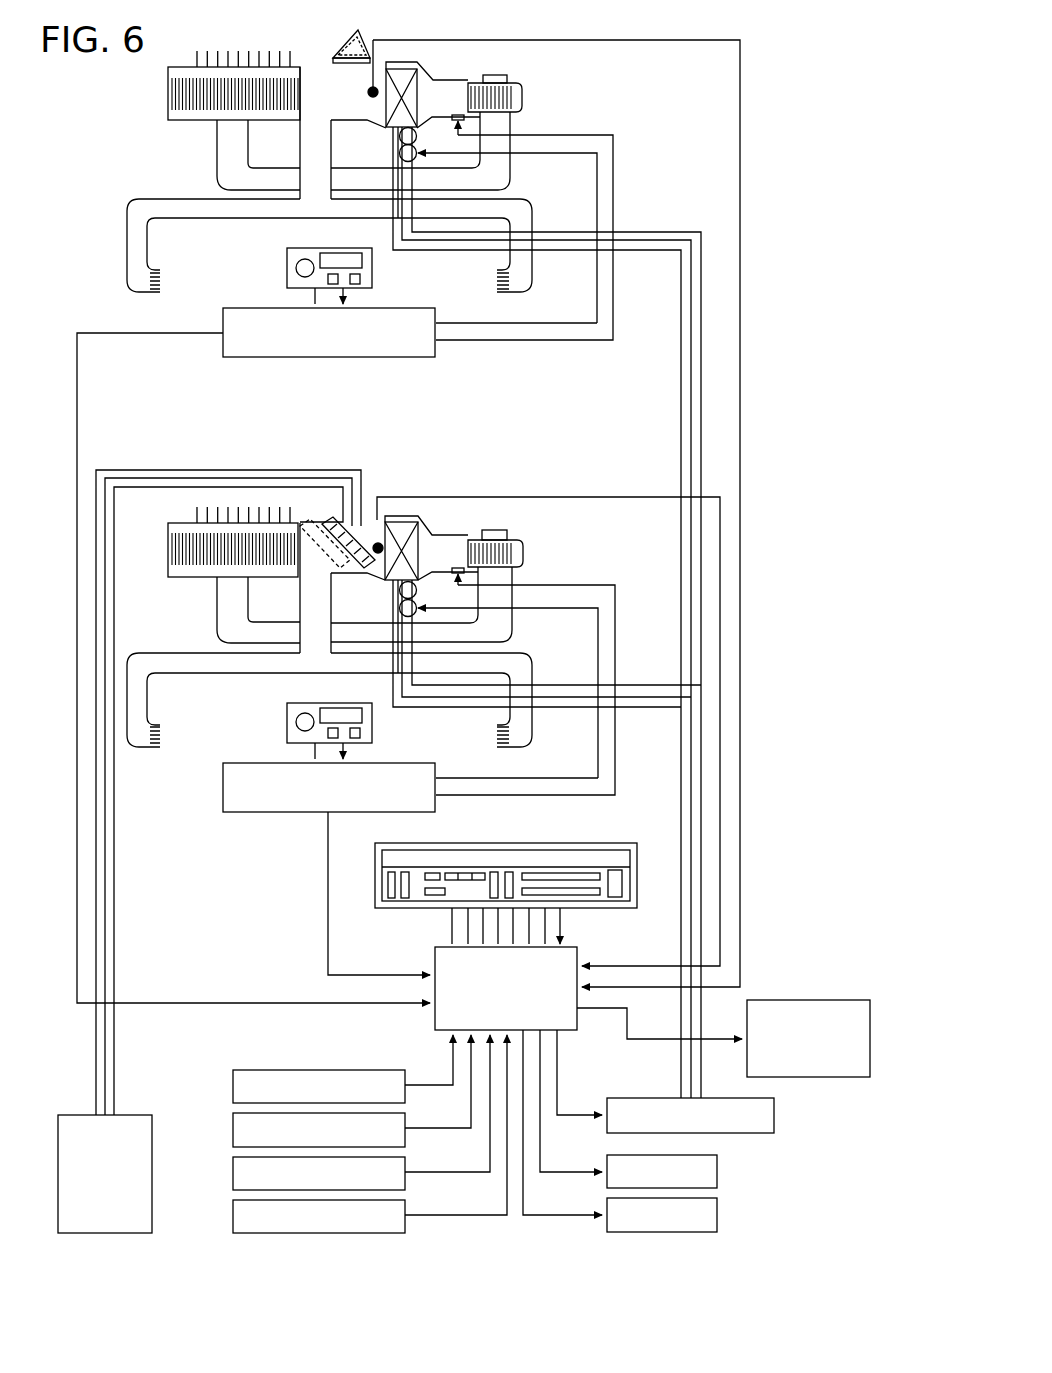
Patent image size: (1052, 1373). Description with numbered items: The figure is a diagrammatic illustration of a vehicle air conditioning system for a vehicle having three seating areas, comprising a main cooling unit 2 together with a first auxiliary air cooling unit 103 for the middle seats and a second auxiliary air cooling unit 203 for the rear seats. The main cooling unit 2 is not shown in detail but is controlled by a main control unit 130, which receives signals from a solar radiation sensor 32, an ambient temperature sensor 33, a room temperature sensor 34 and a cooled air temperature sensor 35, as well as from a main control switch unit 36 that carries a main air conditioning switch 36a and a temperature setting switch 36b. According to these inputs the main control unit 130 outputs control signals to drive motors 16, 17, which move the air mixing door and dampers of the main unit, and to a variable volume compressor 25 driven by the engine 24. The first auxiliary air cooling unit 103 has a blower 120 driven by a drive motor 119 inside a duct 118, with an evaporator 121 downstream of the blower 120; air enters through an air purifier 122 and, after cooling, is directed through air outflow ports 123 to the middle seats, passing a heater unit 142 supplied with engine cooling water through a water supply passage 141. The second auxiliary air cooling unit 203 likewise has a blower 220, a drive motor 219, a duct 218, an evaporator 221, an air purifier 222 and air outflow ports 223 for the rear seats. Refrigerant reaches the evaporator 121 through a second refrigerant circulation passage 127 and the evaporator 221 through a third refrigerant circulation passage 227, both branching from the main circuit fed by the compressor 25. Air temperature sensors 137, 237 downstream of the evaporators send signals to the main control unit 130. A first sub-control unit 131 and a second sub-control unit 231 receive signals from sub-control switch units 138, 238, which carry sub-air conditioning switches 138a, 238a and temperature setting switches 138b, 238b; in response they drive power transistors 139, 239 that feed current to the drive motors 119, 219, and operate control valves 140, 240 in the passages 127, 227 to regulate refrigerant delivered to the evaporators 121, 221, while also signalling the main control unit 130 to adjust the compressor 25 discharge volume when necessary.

The main air cooling unit 2 is at (805, 1000).
The drive motor 16 is at (717, 1170).
The drive motor 17 is at (717, 1213).
The engine 24 is at (140, 1115).
The variable volume compressor 25 is at (615, 1098).
The solar radiation (S-R) sensor 32 is at (266, 1070).
The ambient temperature (A-T) sensor 33 is at (233, 1127).
The room temperature (R-T) sensor 34 is at (233, 1171).
The cooled air temperature (C-A) sensor 35 is at (233, 1214).
The main control switch unit 36 is at (498, 876).
The main air conditioning switch 36a is at (616, 875).
The temperature setting switch 36b is at (466, 872).
The first auxiliary air cooling unit 103 is at (137, 464).
The duct 118 is at (505, 585).
The drive motor 119 is at (536, 538).
The blower 120 is at (498, 531).
The evaporator 121 is at (405, 528).
The air purifier 122 is at (185, 552).
The air outflow ports 123 is at (172, 742).
The second refrigerant circulation passage 127 is at (641, 688).
The main control unit 130 is at (435, 1012).
The first sub-control unit 131 is at (283, 812).
The air temperature sensor 137 is at (384, 538).
The first sub-control switch unit 138 is at (319, 721).
The first sub-air conditioning switch 138a is at (297, 716).
The temperature setting switch 138b is at (360, 732).
The power transistor 139 is at (458, 566).
The control valve 140 is at (399, 608).
The water supply passage 141 is at (115, 952).
The heater unit 142 is at (369, 503).
The second auxiliary air cooling unit 203 is at (396, 550).
The duct 218 is at (508, 129).
The drive motor 219 is at (533, 75).
The blower 220 is at (522, 97).
The evaporator 221 is at (404, 66).
The air purifier 222 is at (178, 95).
The air outflow ports 223 is at (172, 288).
The third refrigerant circulation passage 227 is at (683, 358).
The second sub-control unit 231 is at (318, 357).
The air temperature sensor 237 is at (367, 91).
The second sub-control switch unit 238 is at (334, 261).
The second sub-air conditioning switch 238a is at (297, 262).
The temperature setting switch 238b is at (362, 279).
The power transistor 239 is at (458, 113).
The control valve 240 is at (399, 153).